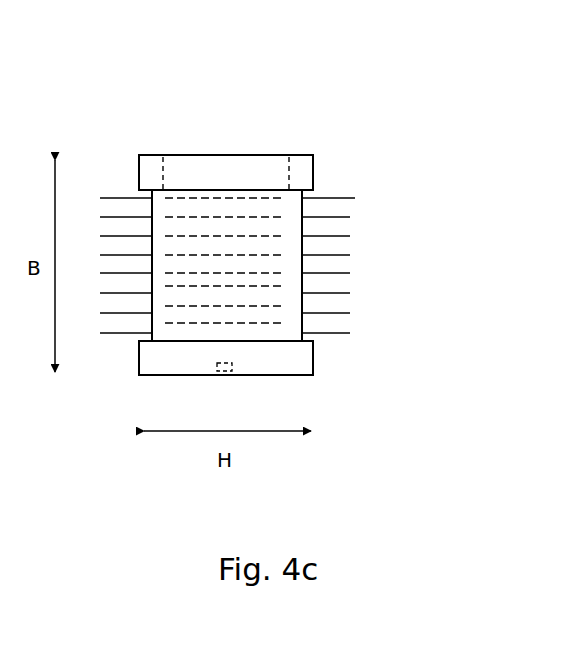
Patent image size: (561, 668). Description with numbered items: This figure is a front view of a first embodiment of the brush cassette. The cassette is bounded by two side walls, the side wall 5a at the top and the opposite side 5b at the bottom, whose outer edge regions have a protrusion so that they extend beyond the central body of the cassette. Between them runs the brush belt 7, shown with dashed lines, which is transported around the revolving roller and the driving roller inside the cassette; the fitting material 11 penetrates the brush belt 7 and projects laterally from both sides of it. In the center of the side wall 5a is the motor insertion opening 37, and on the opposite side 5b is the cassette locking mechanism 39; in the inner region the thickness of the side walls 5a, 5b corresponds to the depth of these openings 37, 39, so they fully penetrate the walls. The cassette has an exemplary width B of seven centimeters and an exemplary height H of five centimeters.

The brush belt 7 is at (300, 263).
The fitting material 11 is at (350, 197).
The side wall 5a is at (322, 163).
The opposite side 5b is at (318, 362).
The motor insertion opening 37 is at (157, 162).
The cassette locking mechanism 39 is at (217, 385).